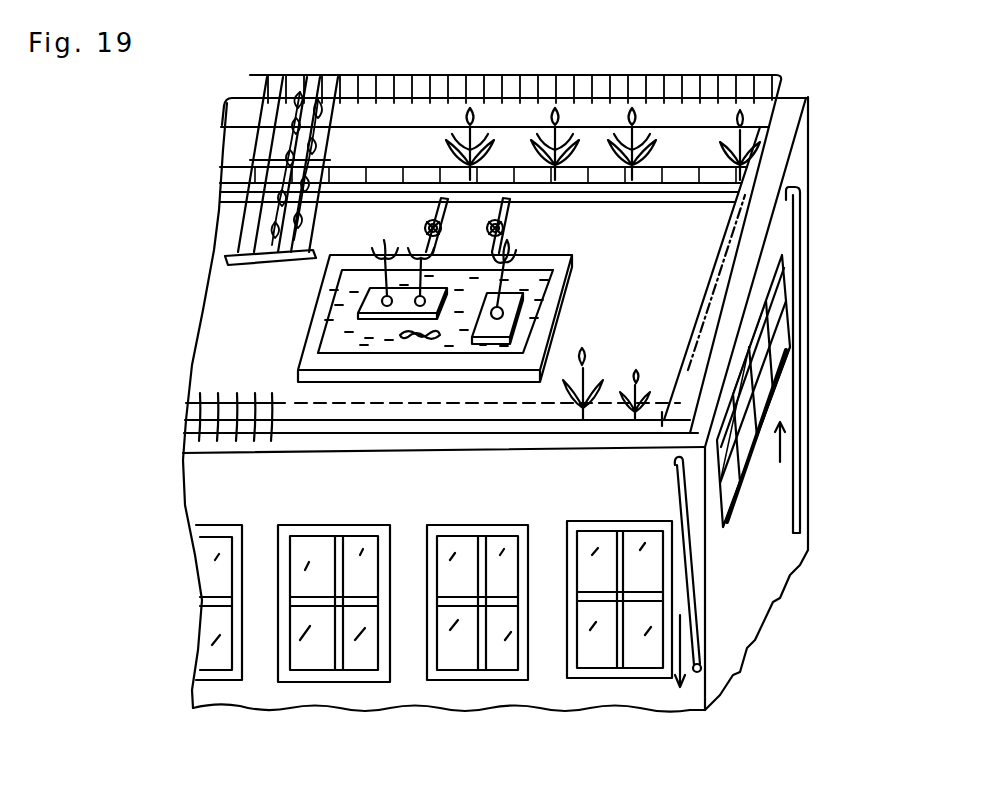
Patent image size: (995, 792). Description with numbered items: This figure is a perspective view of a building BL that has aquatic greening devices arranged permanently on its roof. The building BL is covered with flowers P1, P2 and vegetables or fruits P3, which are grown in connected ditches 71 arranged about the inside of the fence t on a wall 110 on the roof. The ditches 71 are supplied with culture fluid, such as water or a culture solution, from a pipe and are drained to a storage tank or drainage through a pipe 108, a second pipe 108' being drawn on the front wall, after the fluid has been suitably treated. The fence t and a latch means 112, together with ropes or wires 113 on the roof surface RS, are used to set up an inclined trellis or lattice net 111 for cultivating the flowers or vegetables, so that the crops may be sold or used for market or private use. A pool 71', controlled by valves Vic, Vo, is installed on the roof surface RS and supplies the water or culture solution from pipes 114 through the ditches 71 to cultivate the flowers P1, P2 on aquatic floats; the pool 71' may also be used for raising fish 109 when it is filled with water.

The wall 110 is at (441, 125).
The ropes or wires 113 is at (252, 203).
The inclined trellis or lattice net 111 is at (252, 203).
The latch means 112 is at (251, 263).
The pipes 114 is at (503, 230).
The fish 109 is at (417, 340).
The pipe 108 is at (829, 360).
The drain pipe 108' is at (721, 564).
The planting trough 71 is at (483, 296).
The pool 71' is at (464, 310).
The flowers P1 is at (618, 130).
The flowers P2 is at (377, 283).
The vegetables or fruits P3 is at (330, 148).
The fence t is at (378, 76).
The inlet valve Vic is at (425, 226).
The outlet valve Vo is at (490, 224).
The roof surface RS is at (217, 360).
The building BL is at (843, 255).